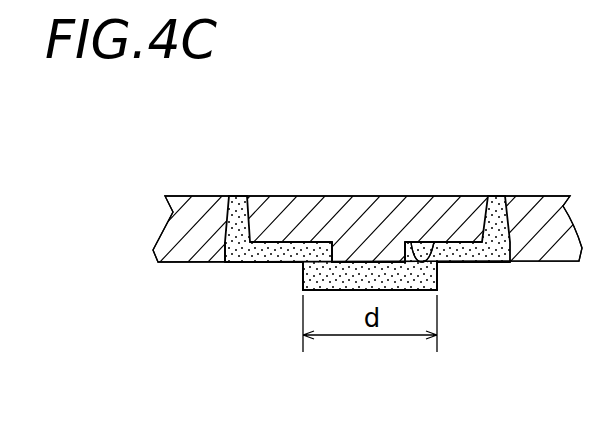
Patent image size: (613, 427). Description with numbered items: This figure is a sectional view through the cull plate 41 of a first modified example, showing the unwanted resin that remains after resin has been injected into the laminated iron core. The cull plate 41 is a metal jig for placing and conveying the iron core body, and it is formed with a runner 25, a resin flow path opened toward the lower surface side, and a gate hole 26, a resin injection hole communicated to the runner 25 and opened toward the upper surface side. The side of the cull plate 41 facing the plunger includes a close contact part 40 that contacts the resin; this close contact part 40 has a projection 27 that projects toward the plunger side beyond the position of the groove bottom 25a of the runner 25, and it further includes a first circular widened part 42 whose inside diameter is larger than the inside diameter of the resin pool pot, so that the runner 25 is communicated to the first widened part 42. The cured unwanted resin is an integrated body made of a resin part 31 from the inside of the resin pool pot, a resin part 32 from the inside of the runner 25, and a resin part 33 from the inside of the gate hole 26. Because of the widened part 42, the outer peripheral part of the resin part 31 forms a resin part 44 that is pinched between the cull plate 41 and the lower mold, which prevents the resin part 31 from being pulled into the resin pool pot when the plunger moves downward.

The gate hole 26 is at (200, 196).
The runner 25 is at (278, 198).
The groove bottom 25a is at (257, 238).
The resin part 31 is at (358, 278).
The projection 27 is at (373, 248).
The first circular widened part 42 is at (412, 242).
The close contact part 40 is at (355, 110).
The cull plate 41 is at (137, 254).
The resin part 33 is at (222, 234).
The resin part 32 is at (258, 260).
The resin part 44 is at (301, 261).